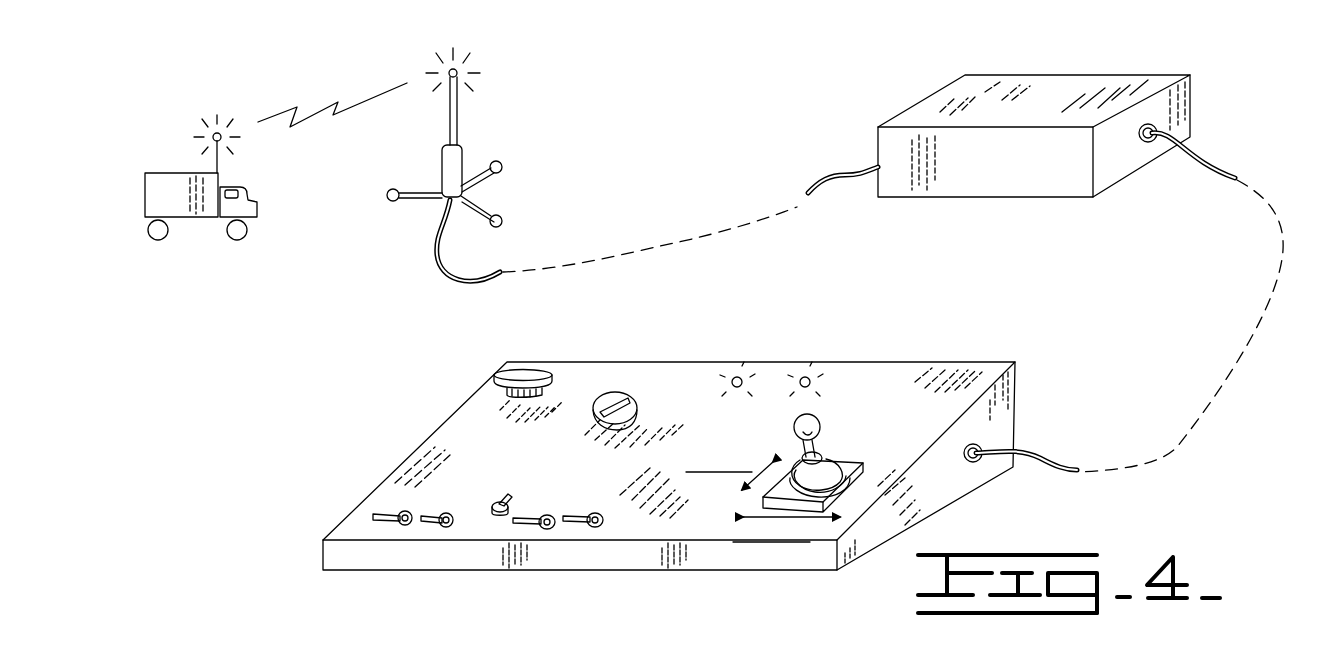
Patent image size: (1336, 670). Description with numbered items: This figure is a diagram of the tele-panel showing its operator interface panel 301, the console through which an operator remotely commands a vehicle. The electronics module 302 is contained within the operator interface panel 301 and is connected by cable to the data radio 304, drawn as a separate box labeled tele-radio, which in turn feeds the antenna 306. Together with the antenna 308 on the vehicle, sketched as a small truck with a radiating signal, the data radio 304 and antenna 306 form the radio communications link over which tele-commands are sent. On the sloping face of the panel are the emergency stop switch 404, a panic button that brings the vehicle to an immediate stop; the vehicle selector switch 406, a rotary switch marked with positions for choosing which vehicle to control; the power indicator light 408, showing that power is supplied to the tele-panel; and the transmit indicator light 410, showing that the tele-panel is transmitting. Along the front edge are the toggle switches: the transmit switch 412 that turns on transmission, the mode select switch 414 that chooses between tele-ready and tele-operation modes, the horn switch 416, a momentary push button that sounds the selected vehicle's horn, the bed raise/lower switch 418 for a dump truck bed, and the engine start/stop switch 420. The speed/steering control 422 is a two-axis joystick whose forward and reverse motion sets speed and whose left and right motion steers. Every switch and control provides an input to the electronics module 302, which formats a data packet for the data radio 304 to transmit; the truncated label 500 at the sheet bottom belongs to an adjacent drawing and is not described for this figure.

The operator interface panel 301 is at (460, 425).
The electronics module 302 is at (870, 348).
The data radio 304 is at (1128, 76).
The antenna 306 is at (497, 174).
The antenna 308 is at (222, 112).
The emergency stop switch 404 is at (522, 378).
The vehicle selector switch 406 is at (618, 388).
The power indicator light 408 is at (738, 377).
The transmit indicator light 410 is at (805, 377).
The transmit switch 412 is at (403, 526).
The mode select switch 414 is at (443, 527).
The horn switch 416 is at (500, 506).
The bed raise/lower switch 418 is at (547, 520).
The engine start/stop switch 420 is at (595, 520).
The speed/steering control 422 is at (822, 420).
The control system 500 is at (603, 668).